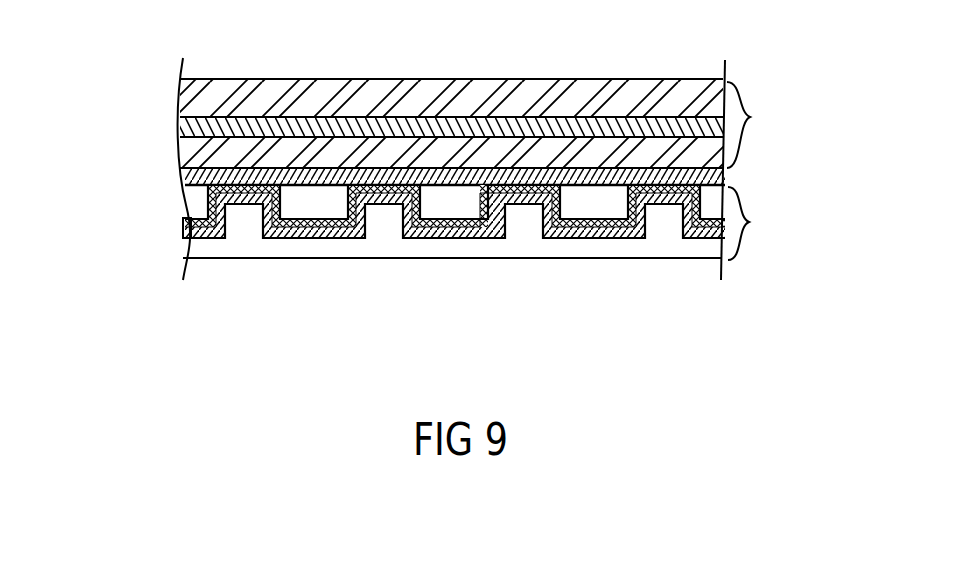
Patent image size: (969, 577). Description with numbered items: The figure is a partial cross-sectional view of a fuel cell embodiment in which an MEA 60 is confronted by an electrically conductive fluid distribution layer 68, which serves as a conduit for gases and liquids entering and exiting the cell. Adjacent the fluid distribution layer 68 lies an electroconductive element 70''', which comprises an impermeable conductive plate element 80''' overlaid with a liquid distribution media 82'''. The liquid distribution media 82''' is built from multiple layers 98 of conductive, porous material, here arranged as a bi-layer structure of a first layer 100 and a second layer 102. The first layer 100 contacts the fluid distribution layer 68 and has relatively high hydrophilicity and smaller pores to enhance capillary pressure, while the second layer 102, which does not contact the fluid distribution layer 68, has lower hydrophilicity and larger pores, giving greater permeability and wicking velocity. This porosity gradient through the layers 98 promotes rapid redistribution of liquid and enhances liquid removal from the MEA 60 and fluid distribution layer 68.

The MEA 60 is at (762, 115).
The fluid distribution layer 68 is at (187, 174).
The electroconductive element 70''' is at (534, 212).
The impermeable conductive plate element 80''' is at (455, 275).
The liquid distribution media 82''' is at (114, 216).
The layers 98 is at (610, 238).
The first layer 100 is at (480, 238).
The second layer 102 is at (422, 238).